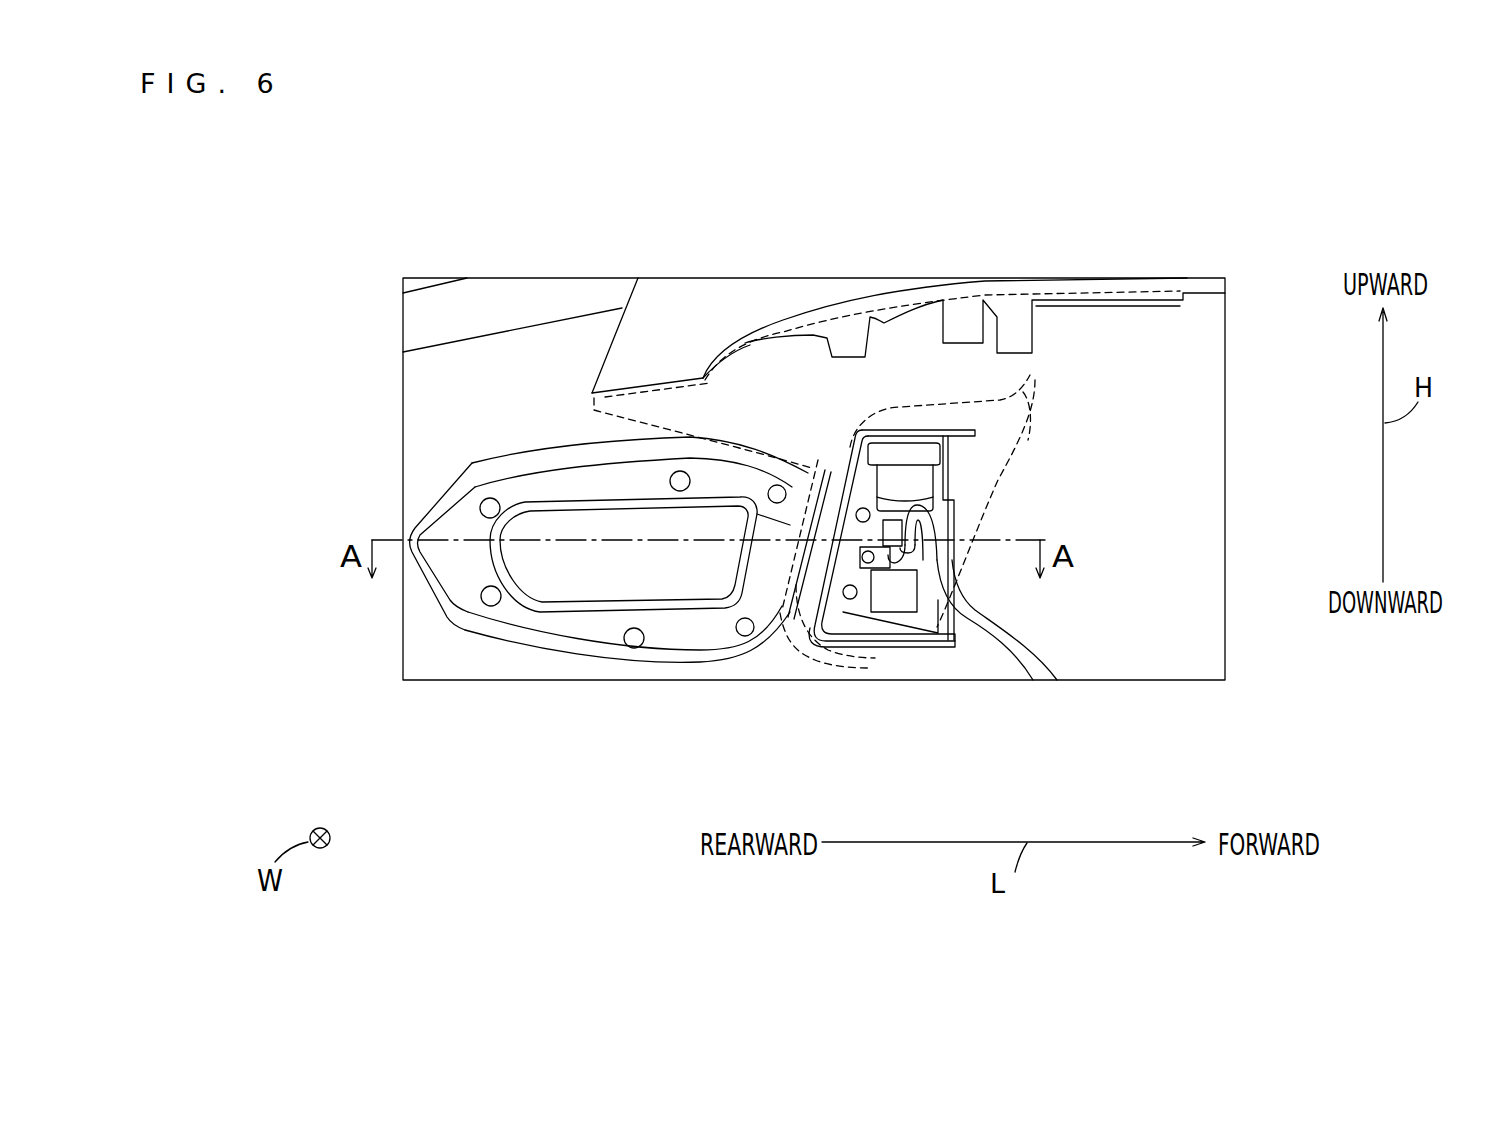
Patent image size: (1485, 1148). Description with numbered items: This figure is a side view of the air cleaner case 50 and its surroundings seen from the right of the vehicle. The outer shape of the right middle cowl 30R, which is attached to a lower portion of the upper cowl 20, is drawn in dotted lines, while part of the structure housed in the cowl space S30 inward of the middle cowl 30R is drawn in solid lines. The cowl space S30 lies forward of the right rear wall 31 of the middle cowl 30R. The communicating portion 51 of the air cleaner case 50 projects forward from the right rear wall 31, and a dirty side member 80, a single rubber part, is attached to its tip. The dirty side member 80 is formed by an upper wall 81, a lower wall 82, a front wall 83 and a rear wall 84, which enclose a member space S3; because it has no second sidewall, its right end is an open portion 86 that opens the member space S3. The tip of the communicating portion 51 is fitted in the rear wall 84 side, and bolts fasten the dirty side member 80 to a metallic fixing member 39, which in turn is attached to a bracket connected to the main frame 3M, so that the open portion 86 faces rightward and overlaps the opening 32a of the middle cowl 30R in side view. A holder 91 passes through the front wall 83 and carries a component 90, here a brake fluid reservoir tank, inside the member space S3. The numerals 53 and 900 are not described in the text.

The main frame 3M is at (507, 292).
The upper cowl 20 is at (653, 292).
The fixing member 39 is at (805, 475).
The right middle cowl 30R is at (647, 392).
The opening 32a is at (1035, 380).
The cowl space S30 is at (1114, 453).
The air cleaner case 50 is at (472, 463).
The opening 53 is at (545, 470).
The communicating portion 51 is at (790, 587).
The seal member 900 is at (480, 662).
The right rear wall 31 is at (742, 615).
The rear wall 84 is at (852, 460).
The upper wall 81 is at (927, 430).
The dirty side member 80 is at (905, 425).
The component 90 is at (930, 458).
The holder 91 is at (900, 545).
The front wall 83 is at (957, 587).
The member space S3 is at (907, 608).
The lower wall 82 is at (913, 647).
The open portion 86 is at (878, 630).